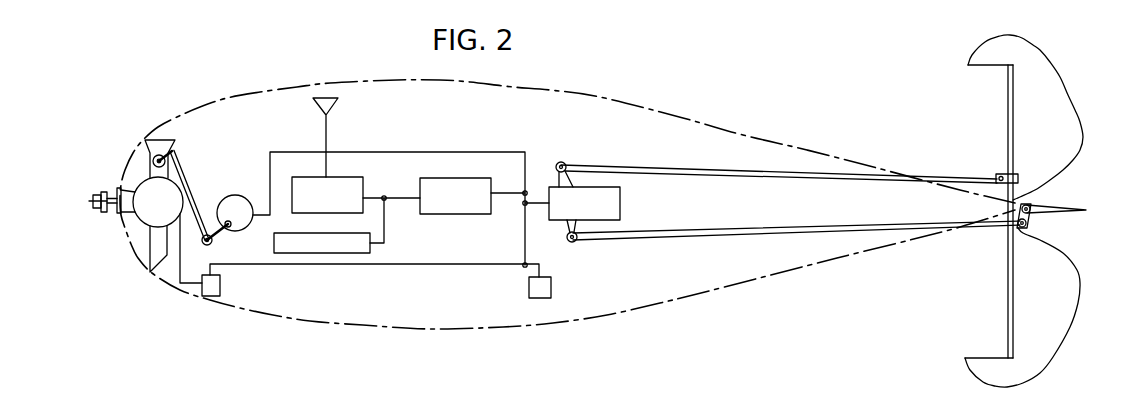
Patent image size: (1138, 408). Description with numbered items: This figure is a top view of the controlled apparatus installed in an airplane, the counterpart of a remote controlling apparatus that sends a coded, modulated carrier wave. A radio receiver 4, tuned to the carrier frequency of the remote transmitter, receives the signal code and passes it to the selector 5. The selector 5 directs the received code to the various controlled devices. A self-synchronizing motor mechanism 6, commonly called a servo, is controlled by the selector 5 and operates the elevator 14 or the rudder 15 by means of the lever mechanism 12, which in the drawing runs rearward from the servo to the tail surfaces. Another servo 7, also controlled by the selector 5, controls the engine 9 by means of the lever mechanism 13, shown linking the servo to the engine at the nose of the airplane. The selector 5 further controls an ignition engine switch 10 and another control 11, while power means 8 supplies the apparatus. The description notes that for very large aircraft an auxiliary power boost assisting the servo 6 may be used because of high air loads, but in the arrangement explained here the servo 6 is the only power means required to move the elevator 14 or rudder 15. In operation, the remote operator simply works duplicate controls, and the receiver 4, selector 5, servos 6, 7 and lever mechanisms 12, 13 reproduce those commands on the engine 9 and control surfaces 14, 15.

The radio receiver 4 is at (320, 205).
The selector 5 is at (448, 205).
The self-synchronizing motor mechanism 6 is at (576, 212).
The servo 7 is at (229, 219).
The power means 8 is at (315, 255).
The engine 9 is at (151, 212).
The ignition engine switch 10 is at (220, 286).
The control 11 is at (551, 289).
The lever mechanism 12 is at (676, 176).
The lever mechanism 13 is at (192, 193).
The elevator 14 is at (1057, 84).
The rudder 15 is at (1066, 216).